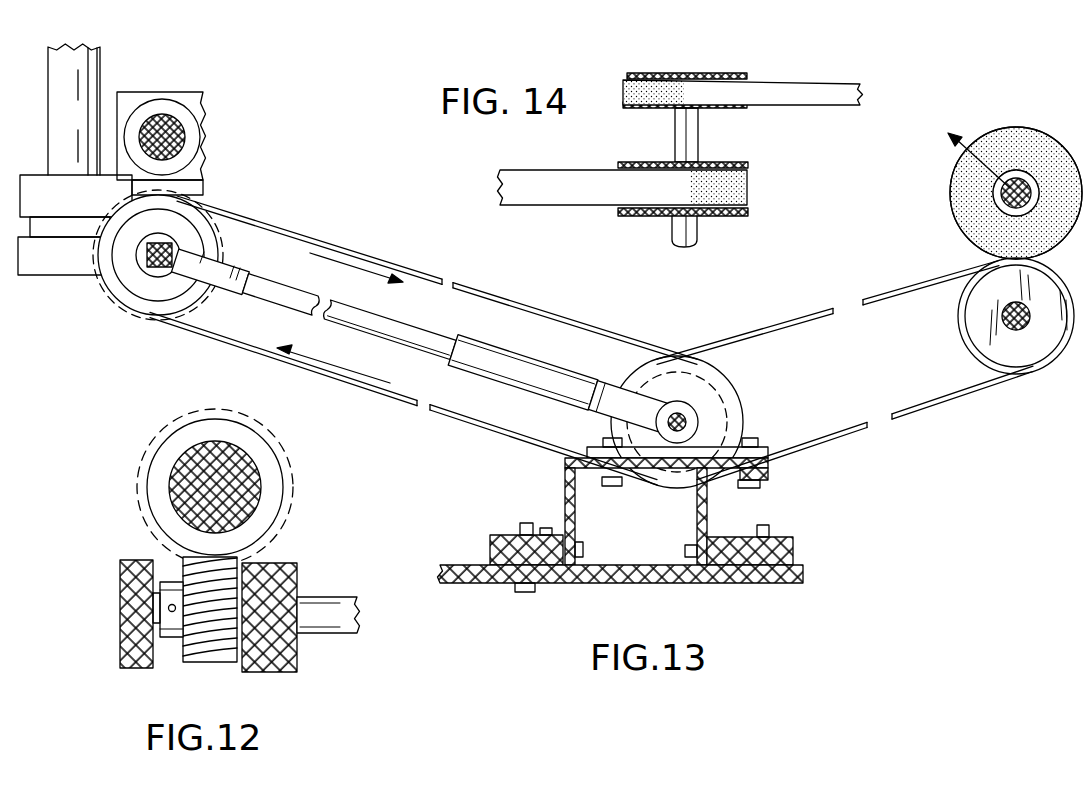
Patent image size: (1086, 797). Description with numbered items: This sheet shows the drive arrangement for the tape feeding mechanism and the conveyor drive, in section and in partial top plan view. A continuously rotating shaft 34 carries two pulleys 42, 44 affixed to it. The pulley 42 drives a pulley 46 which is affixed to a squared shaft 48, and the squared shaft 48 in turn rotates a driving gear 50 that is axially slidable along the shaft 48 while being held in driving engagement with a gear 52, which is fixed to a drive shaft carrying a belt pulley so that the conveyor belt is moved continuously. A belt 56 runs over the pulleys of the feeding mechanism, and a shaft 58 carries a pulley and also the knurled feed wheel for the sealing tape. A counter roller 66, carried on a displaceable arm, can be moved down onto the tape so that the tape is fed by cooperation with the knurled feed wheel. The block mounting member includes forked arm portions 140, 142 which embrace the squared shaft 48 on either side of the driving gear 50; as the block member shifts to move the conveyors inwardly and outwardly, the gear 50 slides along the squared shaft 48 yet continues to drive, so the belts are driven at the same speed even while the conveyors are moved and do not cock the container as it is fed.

In FIG. 13, the shaft 34 is at (690, 417).
In FIG. 14, the shaft 34 is at (695, 237).
In FIG. 14, the pulley 42 is at (730, 167).
In FIG. 14, the pulley 44 is at (737, 78).
In FIG. 13, the pulley 46 is at (185, 303).
In FIG. 13, the squared shaft 48 is at (147, 264).
In FIG. 12, the squared shaft 48 is at (337, 622).
In FIG. 12, the driving gear 50 is at (210, 653).
In FIG. 12, the gear 52 is at (290, 472).
In FIG. 13, the belt 56 is at (925, 404).
In FIG. 14, the belt 56 is at (788, 98).
In FIG. 13, the shaft 58 is at (1017, 330).
In FIG. 13, the counter roller 66 is at (1052, 107).
In FIG. 12, the forked arm portion 140 is at (137, 660).
In FIG. 12, the forked arm portion 142 is at (280, 658).